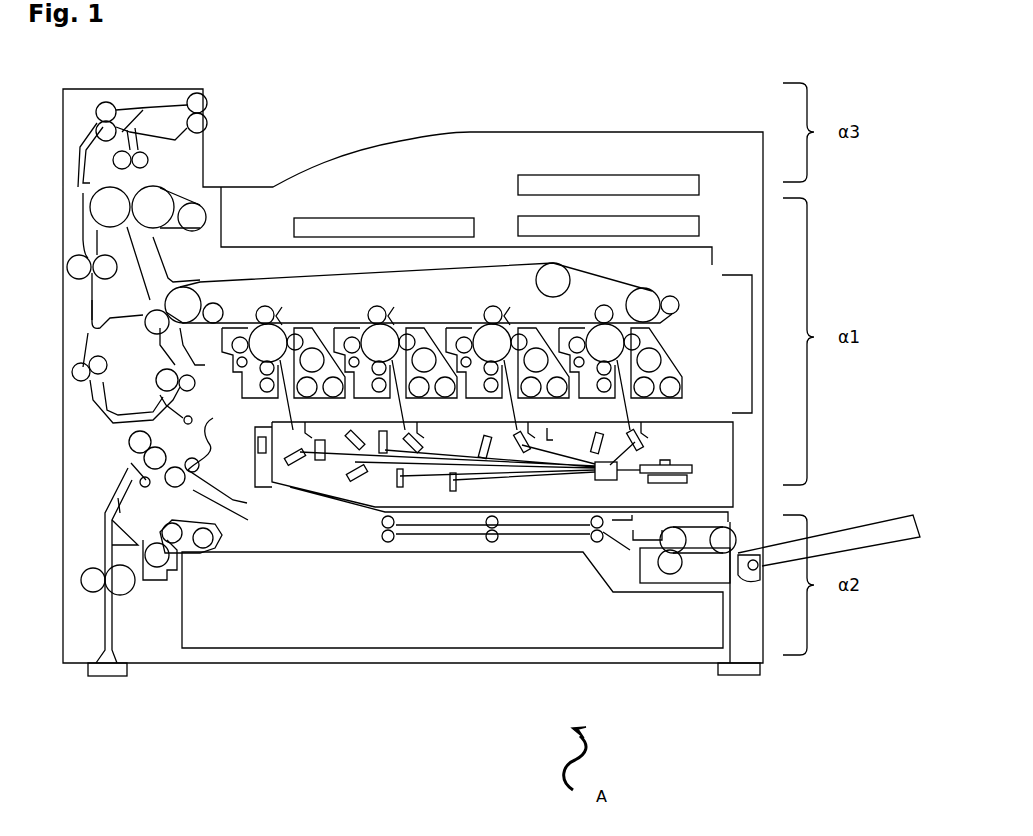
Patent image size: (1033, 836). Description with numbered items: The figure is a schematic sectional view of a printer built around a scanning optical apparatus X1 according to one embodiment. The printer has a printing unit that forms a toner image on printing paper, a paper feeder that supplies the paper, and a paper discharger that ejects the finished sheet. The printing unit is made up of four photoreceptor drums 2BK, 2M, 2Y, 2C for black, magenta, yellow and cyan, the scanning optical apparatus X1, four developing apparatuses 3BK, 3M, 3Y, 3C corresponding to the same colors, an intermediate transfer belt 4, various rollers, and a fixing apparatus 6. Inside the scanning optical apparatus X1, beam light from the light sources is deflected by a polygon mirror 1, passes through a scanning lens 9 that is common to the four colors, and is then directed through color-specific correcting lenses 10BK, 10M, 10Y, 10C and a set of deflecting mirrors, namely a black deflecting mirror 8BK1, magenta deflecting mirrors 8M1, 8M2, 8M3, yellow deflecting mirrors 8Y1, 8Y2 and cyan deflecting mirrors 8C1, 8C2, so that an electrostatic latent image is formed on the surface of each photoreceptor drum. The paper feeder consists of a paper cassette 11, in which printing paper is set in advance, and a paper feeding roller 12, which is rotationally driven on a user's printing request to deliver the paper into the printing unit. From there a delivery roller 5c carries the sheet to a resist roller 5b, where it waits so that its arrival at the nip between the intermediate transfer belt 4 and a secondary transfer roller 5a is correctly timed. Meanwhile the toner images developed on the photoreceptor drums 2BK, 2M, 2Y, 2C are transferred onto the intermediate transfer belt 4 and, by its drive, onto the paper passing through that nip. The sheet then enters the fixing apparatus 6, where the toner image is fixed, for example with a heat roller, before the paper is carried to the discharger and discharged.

The polygon mirror 1 is at (692, 470).
The photoreceptor drum 2BK is at (281, 307).
The photoreceptor drum 2M is at (391, 307).
The photoreceptor drum 2Y is at (505, 306).
The photoreceptor drum 2C is at (614, 310).
The developing apparatus 3BK is at (324, 334).
The developing apparatus 3M is at (436, 334).
The developing apparatus 3Y is at (548, 334).
The developing apparatus 3C is at (662, 352).
The intermediate transfer belt 4 is at (436, 272).
The secondary transfer roller 5a is at (160, 329).
The resist roller 5b is at (100, 390).
The delivery roller 5c is at (128, 442).
The fixing apparatus 6 is at (108, 205).
The black deflecting mirror 8BK1 is at (298, 518).
The magenta deflecting mirror 8M1 is at (405, 472).
The magenta deflecting mirror 8M2 is at (357, 483).
The magenta deflecting mirror 8M3 is at (372, 518).
The yellow deflecting mirror 8Y1 is at (523, 465).
The yellow deflecting mirror 8Y2 is at (408, 512).
The cyan deflecting mirror 8C1 is at (636, 462).
The cyan deflecting mirror 8C2 is at (455, 512).
The scanning lens 9 is at (605, 481).
The black correcting lens 10BK is at (306, 399).
The magenta correcting lens 10M is at (414, 399).
The yellow correcting lens 10Y is at (500, 399).
The cyan correcting lens 10C is at (610, 399).
The paper cassette 11 is at (267, 615).
The paper feeding roller 12 is at (203, 545).
The scanning optical apparatus X1 is at (700, 420).